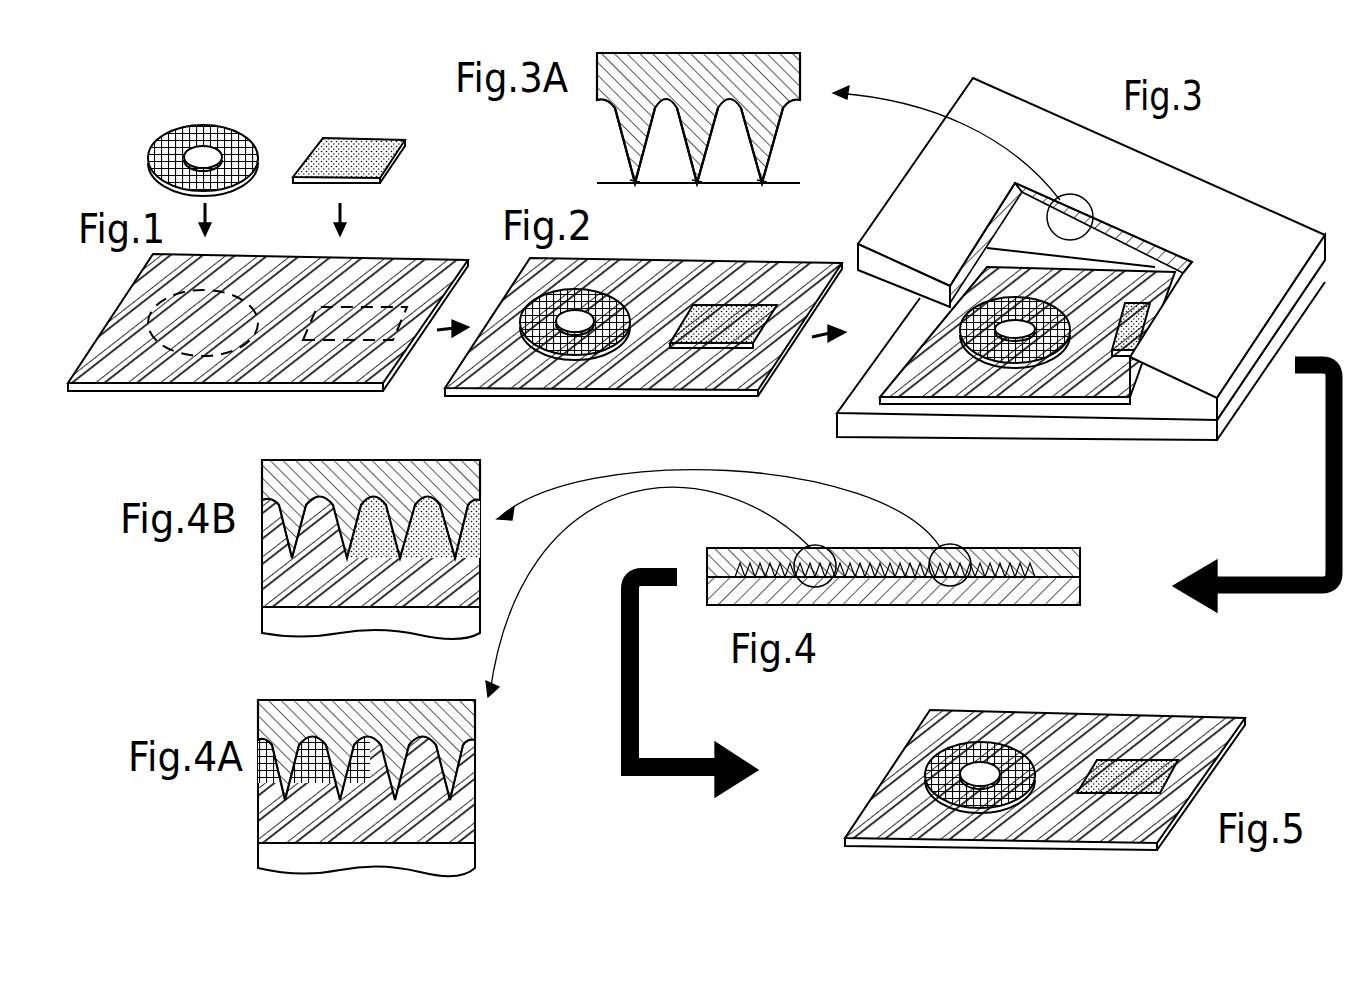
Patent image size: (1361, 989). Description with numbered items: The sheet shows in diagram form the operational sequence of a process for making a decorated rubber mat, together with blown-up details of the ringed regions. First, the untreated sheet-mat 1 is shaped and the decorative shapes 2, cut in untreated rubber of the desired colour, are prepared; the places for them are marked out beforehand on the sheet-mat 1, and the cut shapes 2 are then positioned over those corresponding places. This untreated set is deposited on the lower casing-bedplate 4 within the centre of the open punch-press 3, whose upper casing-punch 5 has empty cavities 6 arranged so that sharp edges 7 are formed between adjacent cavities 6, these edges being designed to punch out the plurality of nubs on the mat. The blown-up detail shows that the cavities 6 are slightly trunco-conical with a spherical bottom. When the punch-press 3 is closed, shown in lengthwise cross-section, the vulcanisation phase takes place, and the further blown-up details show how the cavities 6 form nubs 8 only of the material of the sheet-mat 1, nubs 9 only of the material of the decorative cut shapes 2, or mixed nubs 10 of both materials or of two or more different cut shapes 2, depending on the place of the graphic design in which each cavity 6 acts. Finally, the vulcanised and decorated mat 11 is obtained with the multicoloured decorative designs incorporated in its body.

In FIG. 2, the untreated sheet-mat 1 is at (746, 270).
In FIG. 3, the untreated sheet-mat 1 is at (880, 373).
In FIG. 4B, the untreated sheet-mat 1 is at (383, 549).
In FIG. 4A, the untreated sheet-mat 1 is at (460, 816).
In FIG. 1, the decorative shapes 2 is at (276, 172).
In FIG. 2, the decorative shapes 2 is at (648, 286).
In FIG. 3, the decorative shapes 2 is at (1055, 388).
In FIG. 3, the punch-press 3 is at (1242, 186).
In FIG. 4, the punch-press 3 is at (928, 552).
In FIG. 3, the casing-bedplate 4 is at (1173, 427).
In FIG. 4B, the casing-bedplate 4 is at (283, 622).
In FIG. 4A, the casing-bedplate 4 is at (435, 859).
In FIG. 4, the casing-bedplate 4 is at (1052, 606).
In FIG. 3A, the casing-punch 5 is at (765, 70).
In FIG. 3, the casing-punch 5 is at (1263, 225).
In FIG. 4B, the casing-punch 5 is at (432, 490).
In FIG. 4A, the casing-punch 5 is at (405, 712).
In FIG. 4, the casing-punch 5 is at (1047, 550).
In FIG. 3A, the cavities 6 is at (665, 145).
In FIG. 3A, the sharp edges 7 is at (755, 192).
In FIG. 4B, the nubs resulting from the punch 8 is at (293, 482).
In FIG. 4A, the nubs resulting from the punch 8 is at (451, 735).
In FIG. 4B, the nubs resulting from cut shapes 9 is at (463, 520).
In FIG. 4A, the nubs resulting from cut shapes 9 is at (294, 712).
In FIG. 4B, the nubs resulting from mixed punching and cutting 10 is at (378, 490).
In FIG. 4A, the nubs resulting from mixed punching and cutting 10 is at (370, 735).
In FIG. 5, the vulcanised and decorated mat 11 is at (972, 704).